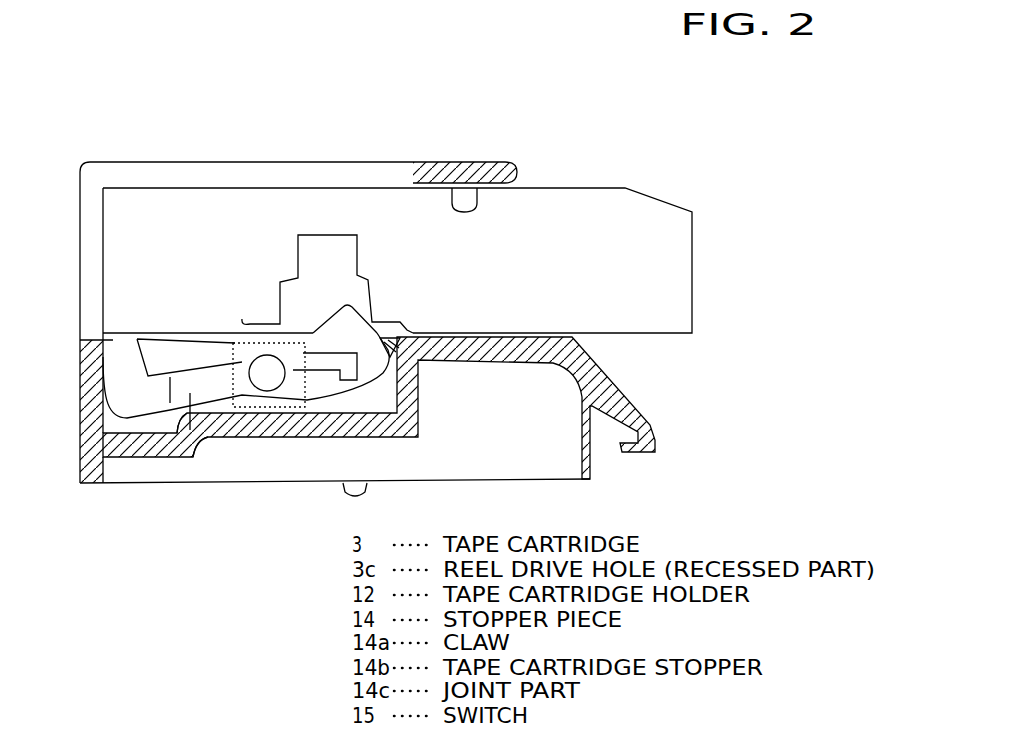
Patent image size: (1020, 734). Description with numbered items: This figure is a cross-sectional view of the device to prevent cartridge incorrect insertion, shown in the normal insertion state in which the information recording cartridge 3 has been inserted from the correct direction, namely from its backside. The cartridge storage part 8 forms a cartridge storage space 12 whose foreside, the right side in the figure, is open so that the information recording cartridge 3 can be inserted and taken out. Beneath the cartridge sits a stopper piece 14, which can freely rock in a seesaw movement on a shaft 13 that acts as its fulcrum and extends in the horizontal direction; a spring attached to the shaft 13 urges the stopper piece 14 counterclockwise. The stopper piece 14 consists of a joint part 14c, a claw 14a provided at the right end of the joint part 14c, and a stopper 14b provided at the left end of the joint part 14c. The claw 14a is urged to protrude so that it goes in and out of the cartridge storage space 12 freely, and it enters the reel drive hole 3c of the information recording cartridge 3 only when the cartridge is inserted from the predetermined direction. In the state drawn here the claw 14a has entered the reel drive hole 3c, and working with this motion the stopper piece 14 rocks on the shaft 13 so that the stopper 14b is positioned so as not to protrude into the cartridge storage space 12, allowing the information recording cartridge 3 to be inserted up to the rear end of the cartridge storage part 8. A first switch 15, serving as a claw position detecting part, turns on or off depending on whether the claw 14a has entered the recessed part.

The information recording cartridge 3 is at (608, 186).
The reel drive hole 3c is at (327, 273).
The cartridge storage part 8 is at (77, 486).
The cartridge storage space 12 is at (485, 160).
The shaft 13 is at (268, 392).
The stopper piece 14 is at (208, 437).
The claw 14a is at (347, 318).
The stopper 14b is at (130, 357).
The joint part 14c is at (188, 436).
The first switch 15 is at (402, 336).